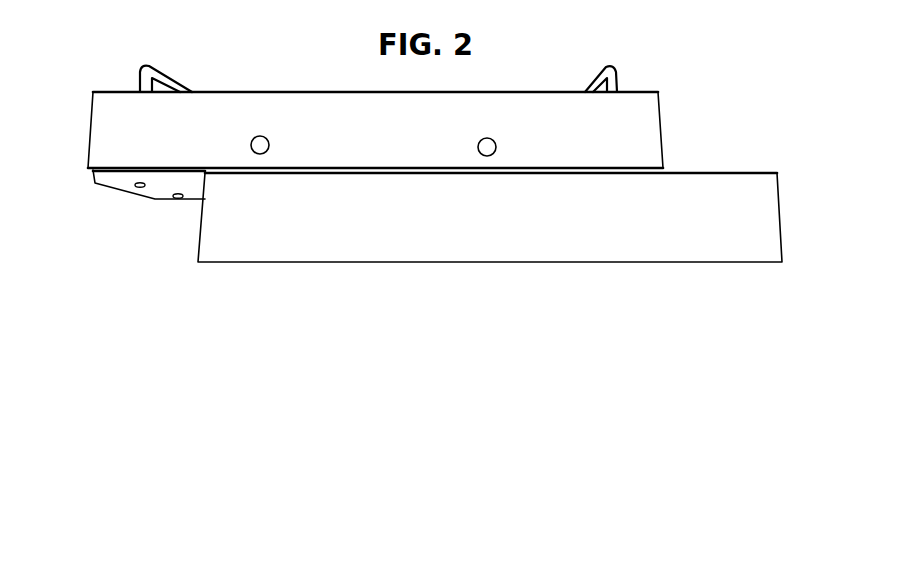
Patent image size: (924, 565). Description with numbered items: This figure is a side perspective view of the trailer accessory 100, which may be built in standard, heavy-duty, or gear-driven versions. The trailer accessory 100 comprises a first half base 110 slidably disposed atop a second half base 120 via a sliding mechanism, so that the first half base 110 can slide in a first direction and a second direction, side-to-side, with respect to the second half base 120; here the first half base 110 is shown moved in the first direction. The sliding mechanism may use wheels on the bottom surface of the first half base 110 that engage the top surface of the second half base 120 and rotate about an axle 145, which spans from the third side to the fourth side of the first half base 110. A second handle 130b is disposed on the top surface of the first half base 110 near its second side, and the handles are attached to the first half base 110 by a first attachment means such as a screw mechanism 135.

The trailer accessory 100 is at (553, 418).
The first half base 110 is at (662, 128).
The second half base 120 is at (782, 217).
The second handle 130b is at (615, 65).
The screw mechanism 135 is at (140, 188).
The axle 145 is at (258, 136).